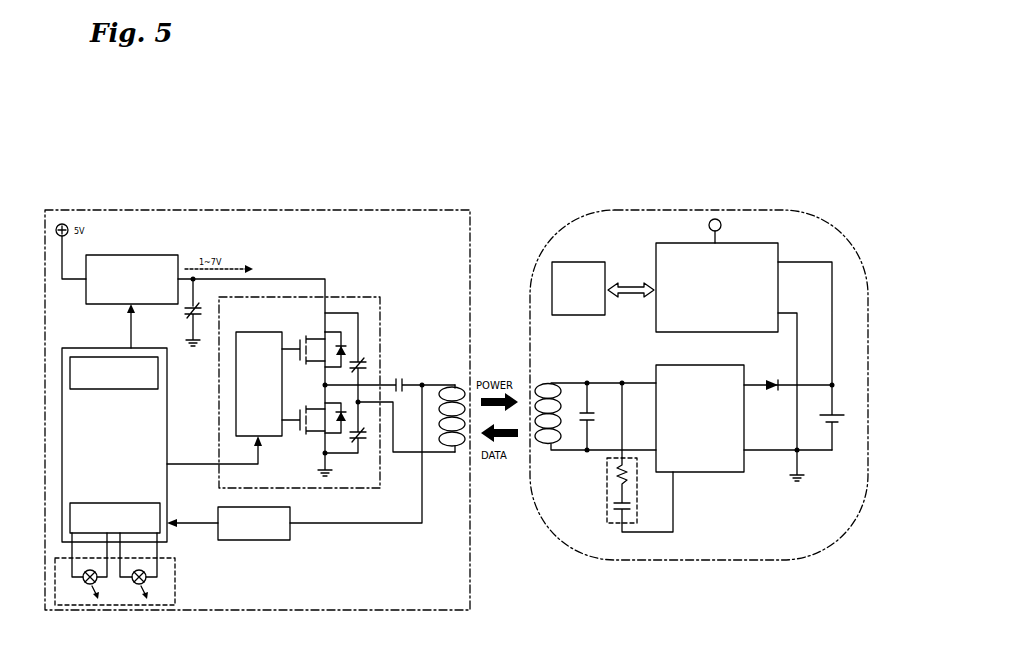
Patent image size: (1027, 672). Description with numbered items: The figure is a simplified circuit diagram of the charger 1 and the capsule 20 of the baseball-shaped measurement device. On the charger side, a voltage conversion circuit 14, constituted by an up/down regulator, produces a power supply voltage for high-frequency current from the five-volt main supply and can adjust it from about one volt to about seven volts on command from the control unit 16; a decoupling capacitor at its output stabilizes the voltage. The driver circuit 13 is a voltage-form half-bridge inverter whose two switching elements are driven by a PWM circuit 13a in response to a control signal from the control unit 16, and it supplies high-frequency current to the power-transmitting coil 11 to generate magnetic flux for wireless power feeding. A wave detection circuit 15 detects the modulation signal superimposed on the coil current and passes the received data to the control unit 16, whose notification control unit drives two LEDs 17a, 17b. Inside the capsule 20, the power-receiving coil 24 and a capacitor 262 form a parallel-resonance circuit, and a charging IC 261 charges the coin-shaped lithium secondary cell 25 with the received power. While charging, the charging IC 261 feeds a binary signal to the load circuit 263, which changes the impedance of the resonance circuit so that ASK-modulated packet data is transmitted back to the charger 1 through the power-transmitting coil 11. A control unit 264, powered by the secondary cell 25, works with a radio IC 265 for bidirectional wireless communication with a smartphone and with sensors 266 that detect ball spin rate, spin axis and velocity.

The charger 1 is at (223, 205).
The voltage conversion circuit 14 is at (130, 248).
The control unit 16 is at (52, 425).
The PWM circuit 13a is at (263, 320).
The driver circuit 13 is at (370, 288).
The power-transmitting coil 11 is at (466, 382).
The wave detection circuit 15 is at (245, 548).
The LED 17a is at (85, 582).
The LED 17b is at (144, 582).
The capsule 20 is at (821, 213).
The radio IC 265 is at (572, 254).
The control unit 264 is at (749, 235).
The sensors 266 is at (715, 218).
The power-receiving coil 24 is at (537, 391).
The capacitor 262 is at (590, 412).
The load circuit 263 is at (600, 518).
The charging IC 261 is at (716, 482).
The secondary cell 25 is at (833, 426).